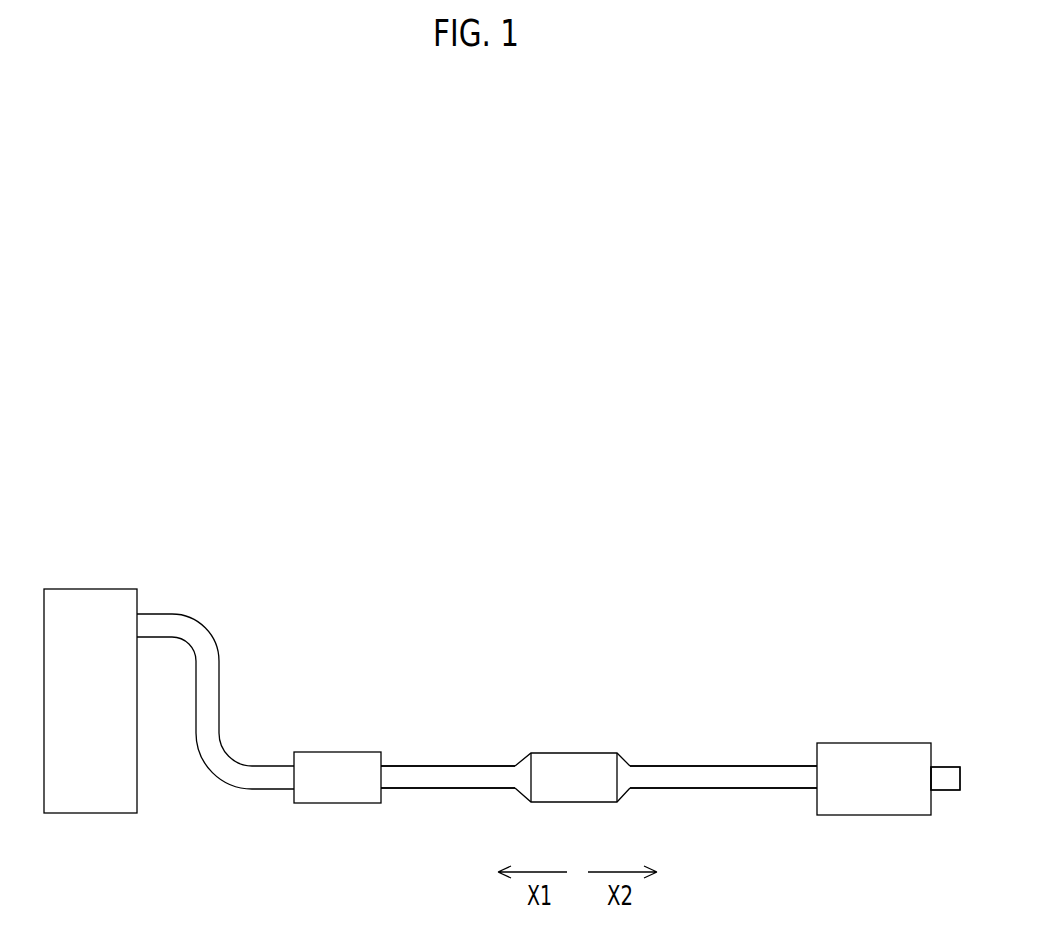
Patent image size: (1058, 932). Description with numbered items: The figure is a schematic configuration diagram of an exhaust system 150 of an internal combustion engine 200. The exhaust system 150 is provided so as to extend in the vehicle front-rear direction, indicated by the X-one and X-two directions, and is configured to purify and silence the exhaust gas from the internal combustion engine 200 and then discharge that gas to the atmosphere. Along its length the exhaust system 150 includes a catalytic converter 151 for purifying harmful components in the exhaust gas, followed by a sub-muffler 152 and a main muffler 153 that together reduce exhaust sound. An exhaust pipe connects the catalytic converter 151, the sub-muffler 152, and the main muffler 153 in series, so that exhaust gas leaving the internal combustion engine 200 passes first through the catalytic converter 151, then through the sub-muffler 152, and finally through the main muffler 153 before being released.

The exhaust system 150 is at (530, 652).
The internal combustion engine 200 is at (100, 589).
The catalytic converter 151 is at (347, 752).
The sub-muffler 152 is at (582, 753).
The main muffler 153 is at (882, 743).